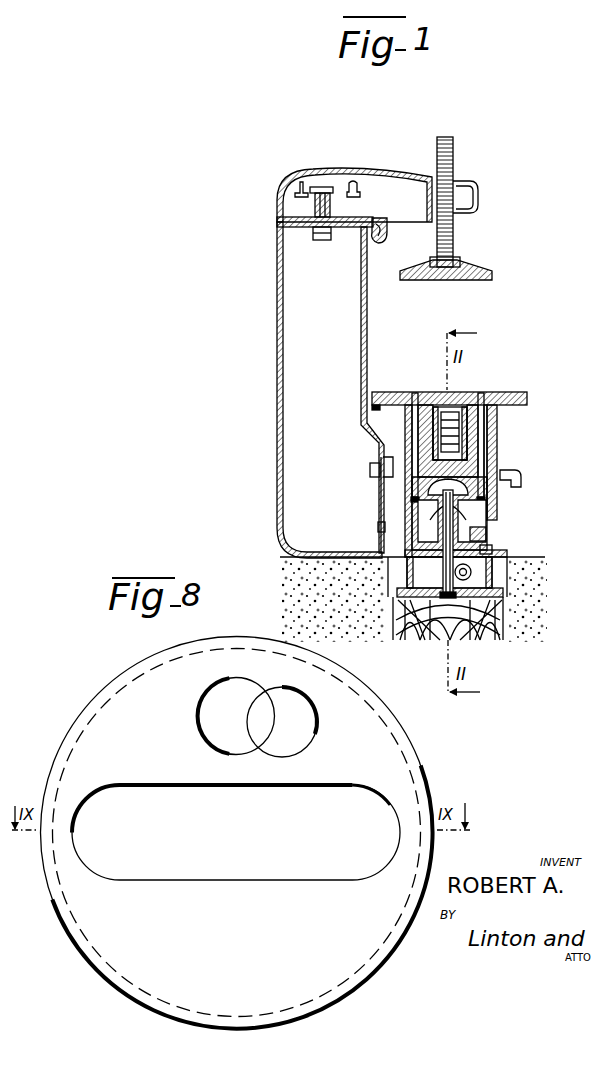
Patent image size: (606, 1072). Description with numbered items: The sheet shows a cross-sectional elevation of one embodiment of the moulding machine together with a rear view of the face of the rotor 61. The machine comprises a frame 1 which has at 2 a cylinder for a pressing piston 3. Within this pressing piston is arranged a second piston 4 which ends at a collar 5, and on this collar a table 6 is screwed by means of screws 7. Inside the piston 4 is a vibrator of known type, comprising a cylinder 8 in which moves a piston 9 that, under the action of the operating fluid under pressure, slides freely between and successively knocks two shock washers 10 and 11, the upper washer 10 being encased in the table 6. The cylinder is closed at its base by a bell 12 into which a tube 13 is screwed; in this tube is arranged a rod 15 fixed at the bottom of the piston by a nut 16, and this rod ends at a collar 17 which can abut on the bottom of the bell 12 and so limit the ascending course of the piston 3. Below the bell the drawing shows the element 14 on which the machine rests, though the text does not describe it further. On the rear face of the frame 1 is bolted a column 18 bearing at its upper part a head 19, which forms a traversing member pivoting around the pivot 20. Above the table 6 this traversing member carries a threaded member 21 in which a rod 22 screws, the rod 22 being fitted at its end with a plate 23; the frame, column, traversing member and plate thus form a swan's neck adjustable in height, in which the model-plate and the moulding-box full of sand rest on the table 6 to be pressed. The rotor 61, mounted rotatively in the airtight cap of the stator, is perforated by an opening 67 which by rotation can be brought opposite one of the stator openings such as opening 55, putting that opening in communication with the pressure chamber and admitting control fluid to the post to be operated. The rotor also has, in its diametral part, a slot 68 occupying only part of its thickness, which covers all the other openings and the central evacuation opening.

In FIG. 1, the frame 1 is at (409, 559).
In FIG. 1, the cylinder 2 is at (497, 515).
In FIG. 1, the piston 3 is at (417, 513).
In FIG. 1, the second piston 4 is at (470, 458).
In FIG. 1, the collar 5 is at (412, 417).
In FIG. 1, the table 6 is at (380, 396).
In FIG. 1, the screws 7 is at (415, 393).
In FIG. 1, the cylinder 8 is at (497, 417).
In FIG. 1, the piston 9 is at (498, 436).
In FIG. 1, the shock washer 10 is at (447, 404).
In FIG. 1, the shock washer 11 is at (498, 497).
In FIG. 1, the bell 12 is at (486, 531).
In FIG. 1, the tube 13 is at (492, 549).
In FIG. 1, the foundation 14 is at (416, 632).
In FIG. 1, the rod 15 is at (443, 569).
In FIG. 1, the nut 16 is at (417, 491).
In FIG. 1, the collar 17 is at (471, 571).
In FIG. 1, the column 18 is at (295, 352).
In FIG. 1, the head 19 is at (375, 183).
In FIG. 1, the pivot 20 is at (317, 204).
In FIG. 1, the threaded member 21 is at (432, 198).
In FIG. 1, the rod 22 is at (456, 151).
In FIG. 1, the plate 23 is at (466, 279).
In FIG. 8, the opening 55 is at (302, 726).
In FIG. 8, the rotor 61 is at (176, 1003).
In FIG. 8, the opening 67 is at (198, 716).
In FIG. 8, the slot 68 is at (204, 796).